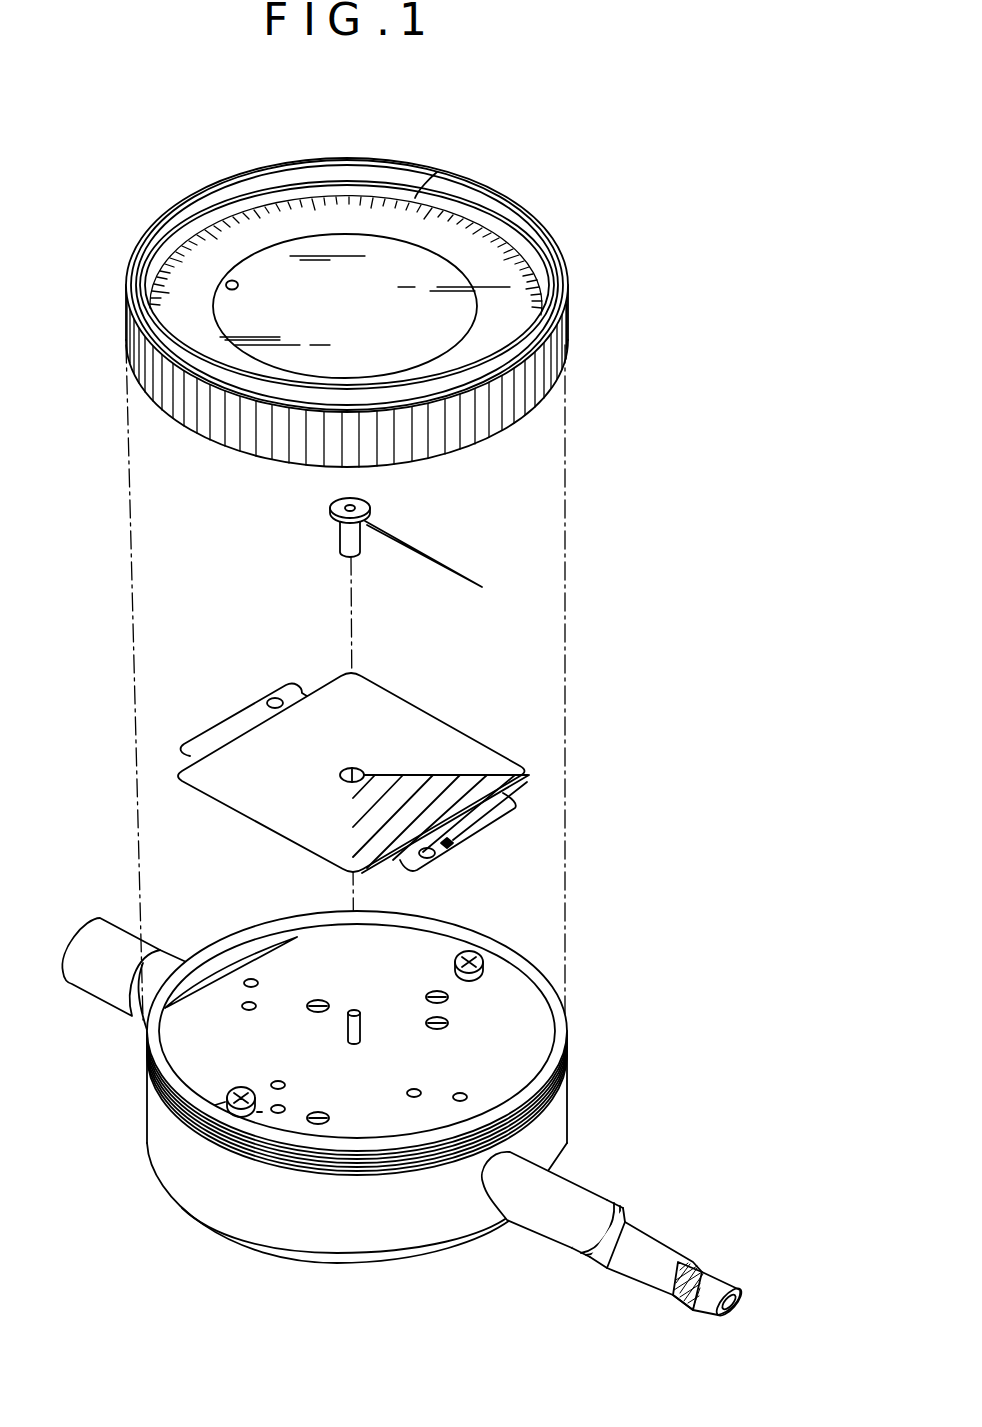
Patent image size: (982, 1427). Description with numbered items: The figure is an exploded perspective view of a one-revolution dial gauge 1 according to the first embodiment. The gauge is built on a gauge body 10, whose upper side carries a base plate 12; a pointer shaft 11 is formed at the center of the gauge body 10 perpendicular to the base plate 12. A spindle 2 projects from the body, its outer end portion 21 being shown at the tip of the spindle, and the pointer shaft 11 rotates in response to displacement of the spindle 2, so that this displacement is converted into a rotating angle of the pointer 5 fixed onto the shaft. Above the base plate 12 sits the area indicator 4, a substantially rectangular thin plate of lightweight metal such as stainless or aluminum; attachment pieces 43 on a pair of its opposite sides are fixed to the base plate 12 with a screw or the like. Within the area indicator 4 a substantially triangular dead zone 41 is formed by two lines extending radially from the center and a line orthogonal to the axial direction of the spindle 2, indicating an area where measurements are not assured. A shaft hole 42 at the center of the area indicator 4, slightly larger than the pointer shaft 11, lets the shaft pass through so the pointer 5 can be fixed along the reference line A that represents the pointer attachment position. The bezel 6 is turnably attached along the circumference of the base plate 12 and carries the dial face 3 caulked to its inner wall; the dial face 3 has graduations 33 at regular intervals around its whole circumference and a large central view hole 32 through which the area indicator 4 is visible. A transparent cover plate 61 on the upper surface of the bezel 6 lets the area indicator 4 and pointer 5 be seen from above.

The one-revolution dial gauge 1 is at (445, 714).
The spindle 2 is at (655, 1236).
The knurled tip of stem 21 is at (713, 1275).
The dial face 3 is at (473, 253).
The view hole 32 is at (224, 283).
The graduations 33 is at (450, 172).
The area indicator 4 is at (375, 767).
The dead zone 41 is at (503, 787).
The shaft hole 42 is at (347, 780).
The attachment pieces 43 is at (228, 722).
The pointer 5 is at (427, 548).
The bezel 6 is at (382, 288).
The cover plate 61 is at (277, 167).
The gauge body 10 is at (445, 1115).
The pointer shaft 11 is at (364, 1027).
The base plate 12 is at (182, 1047).
The reference line A is at (453, 847).